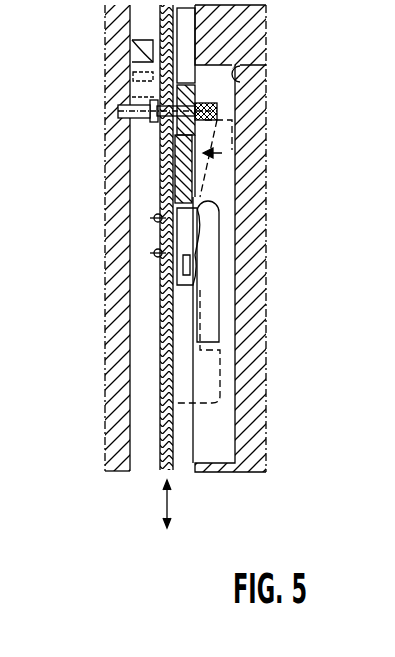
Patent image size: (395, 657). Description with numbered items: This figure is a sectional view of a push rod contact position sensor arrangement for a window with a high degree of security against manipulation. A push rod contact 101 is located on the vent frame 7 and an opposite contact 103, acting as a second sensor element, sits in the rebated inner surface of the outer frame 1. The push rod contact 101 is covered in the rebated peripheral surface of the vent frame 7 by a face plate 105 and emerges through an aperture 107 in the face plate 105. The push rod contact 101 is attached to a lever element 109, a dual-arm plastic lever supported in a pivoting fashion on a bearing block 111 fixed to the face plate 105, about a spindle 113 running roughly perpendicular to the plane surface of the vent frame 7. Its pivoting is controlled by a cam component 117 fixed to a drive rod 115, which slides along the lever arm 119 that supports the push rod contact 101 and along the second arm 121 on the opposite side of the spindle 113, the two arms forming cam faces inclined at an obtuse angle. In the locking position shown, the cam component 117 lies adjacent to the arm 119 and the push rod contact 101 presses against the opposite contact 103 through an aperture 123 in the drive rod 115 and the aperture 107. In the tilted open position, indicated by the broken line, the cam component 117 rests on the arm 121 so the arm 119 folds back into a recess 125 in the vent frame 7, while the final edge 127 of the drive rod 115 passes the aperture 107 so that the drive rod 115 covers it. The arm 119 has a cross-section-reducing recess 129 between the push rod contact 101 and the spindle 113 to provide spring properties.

The outer frame 1 is at (118, 311).
The vent frame 7 is at (246, 331).
The push rod contact 101 is at (222, 104).
The opposite contact 103 is at (150, 103).
The face plate 105 is at (160, 476).
The aperture 107 is at (132, 69).
The lever element 109 is at (226, 148).
The bearing block 111 is at (154, 253).
The spindle 113 is at (190, 237).
The drive rod 115 is at (176, 476).
The cam component 117 is at (221, 232).
The lever arm 119 is at (236, 172).
The second arm 121 is at (215, 262).
The aperture 123 is at (132, 146).
The recess 125 is at (262, 66).
The final edge 127 is at (130, 50).
The push rod 129 is at (160, 199).